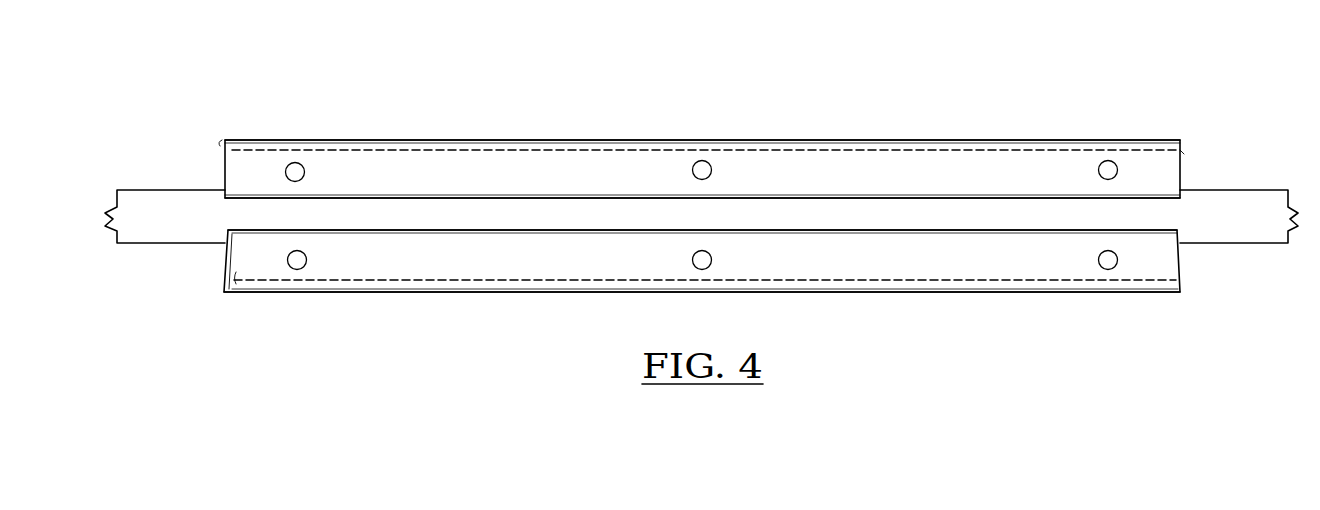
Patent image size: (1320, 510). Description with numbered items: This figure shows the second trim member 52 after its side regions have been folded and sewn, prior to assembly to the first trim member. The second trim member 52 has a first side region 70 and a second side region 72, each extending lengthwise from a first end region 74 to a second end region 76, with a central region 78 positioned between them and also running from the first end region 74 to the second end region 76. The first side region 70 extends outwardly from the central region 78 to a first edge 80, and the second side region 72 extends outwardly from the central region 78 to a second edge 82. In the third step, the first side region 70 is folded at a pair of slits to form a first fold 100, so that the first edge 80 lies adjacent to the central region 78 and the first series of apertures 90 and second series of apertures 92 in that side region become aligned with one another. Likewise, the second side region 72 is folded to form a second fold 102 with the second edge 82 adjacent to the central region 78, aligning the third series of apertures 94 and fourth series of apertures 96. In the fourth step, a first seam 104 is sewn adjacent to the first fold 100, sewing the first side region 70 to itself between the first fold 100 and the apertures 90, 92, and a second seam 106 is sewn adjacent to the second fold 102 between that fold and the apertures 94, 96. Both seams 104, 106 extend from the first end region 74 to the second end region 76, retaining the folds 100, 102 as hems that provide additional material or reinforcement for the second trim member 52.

The second trim member 52 is at (701, 218).
The first side region 70 is at (701, 136).
The second side region 72 is at (702, 297).
The first end region 74 is at (136, 166).
The second end region 76 is at (1266, 164).
The central region 78 is at (867, 215).
The first edge 80 is at (955, 199).
The second edge 82 is at (984, 232).
The first series of apertures 90 is at (680, 135).
The second series of apertures 92 is at (290, 163).
The third series of apertures 94 is at (680, 298).
The fourth series of apertures 96 is at (294, 270).
The first fold 100 is at (578, 140).
The second fold 102 is at (813, 292).
The first seam 104 is at (638, 150).
The second seam 106 is at (588, 283).